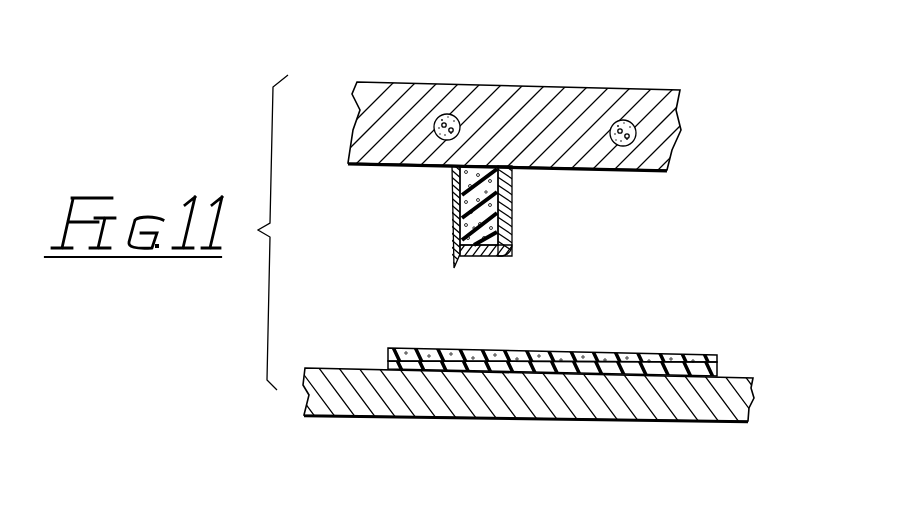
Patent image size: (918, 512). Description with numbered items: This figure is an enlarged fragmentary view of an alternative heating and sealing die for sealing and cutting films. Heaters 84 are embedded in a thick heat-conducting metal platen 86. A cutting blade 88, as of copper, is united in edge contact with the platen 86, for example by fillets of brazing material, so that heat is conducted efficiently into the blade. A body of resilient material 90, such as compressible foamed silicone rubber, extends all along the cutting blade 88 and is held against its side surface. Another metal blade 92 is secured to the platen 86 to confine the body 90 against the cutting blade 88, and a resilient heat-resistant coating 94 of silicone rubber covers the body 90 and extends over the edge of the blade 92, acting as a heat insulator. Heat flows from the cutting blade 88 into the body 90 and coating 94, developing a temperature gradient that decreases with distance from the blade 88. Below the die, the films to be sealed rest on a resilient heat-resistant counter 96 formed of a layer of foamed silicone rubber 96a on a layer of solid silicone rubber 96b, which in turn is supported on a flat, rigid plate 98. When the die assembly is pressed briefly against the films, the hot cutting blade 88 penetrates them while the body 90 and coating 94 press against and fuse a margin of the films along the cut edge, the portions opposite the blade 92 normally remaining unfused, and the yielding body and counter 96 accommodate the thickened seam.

The heaters 84 is at (443, 115).
The platen 86 is at (681, 121).
The cutting blade 88 is at (450, 200).
The body of resilient material 90 is at (492, 198).
The metal blade 92 is at (512, 188).
The resilient heat-resistant coating 94 is at (478, 254).
The counter 96 is at (507, 342).
The foamed silicone rubber 96a is at (390, 350).
The solid silicone rubber 96b is at (388, 365).
The plate 98 is at (748, 400).